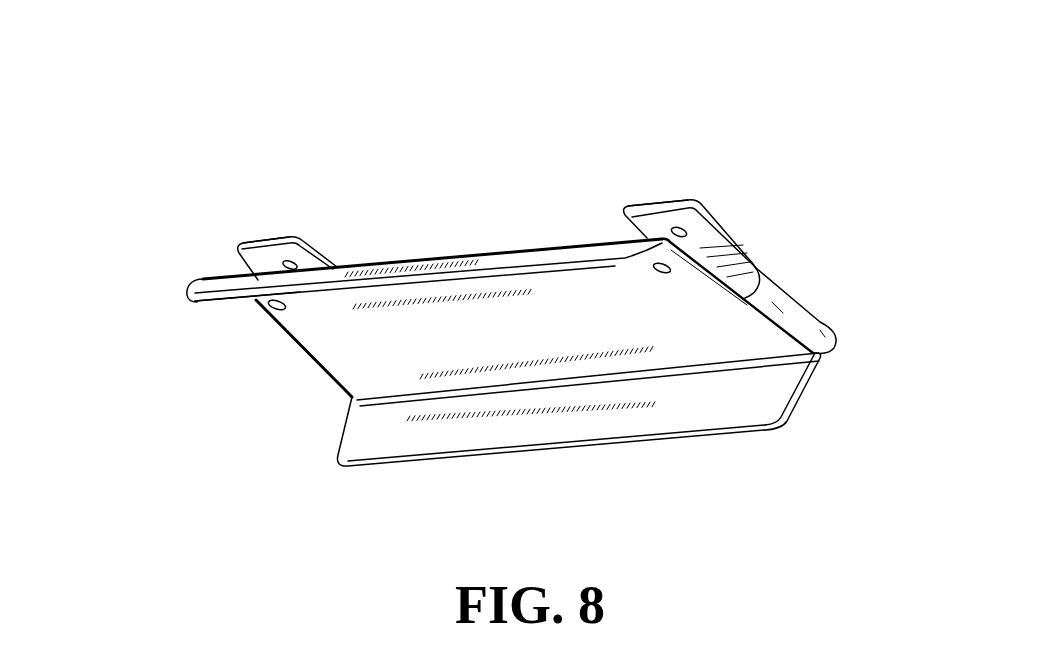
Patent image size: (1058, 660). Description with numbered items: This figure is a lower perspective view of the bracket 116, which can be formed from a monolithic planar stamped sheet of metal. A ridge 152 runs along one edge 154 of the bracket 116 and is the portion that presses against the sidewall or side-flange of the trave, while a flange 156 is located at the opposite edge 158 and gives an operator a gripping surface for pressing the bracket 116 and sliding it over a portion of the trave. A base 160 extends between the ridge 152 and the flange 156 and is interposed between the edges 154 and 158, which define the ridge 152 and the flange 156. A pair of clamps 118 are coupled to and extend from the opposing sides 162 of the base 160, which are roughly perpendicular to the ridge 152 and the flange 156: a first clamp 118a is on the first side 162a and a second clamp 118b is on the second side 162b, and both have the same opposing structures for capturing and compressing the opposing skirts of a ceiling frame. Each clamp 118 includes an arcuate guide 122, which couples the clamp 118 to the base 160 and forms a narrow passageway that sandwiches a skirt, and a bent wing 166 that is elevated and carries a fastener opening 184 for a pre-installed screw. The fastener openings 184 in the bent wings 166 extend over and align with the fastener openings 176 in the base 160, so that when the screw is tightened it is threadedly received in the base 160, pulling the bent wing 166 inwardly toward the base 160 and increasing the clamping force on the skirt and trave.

The bracket 116 is at (501, 95).
The clamp 118 is at (768, 252).
The first clamp 118a is at (698, 187).
The second clamp 118b is at (231, 229).
The arcuate guide 122 is at (817, 318).
The ridge 152 is at (217, 283).
The edge 154 is at (187, 302).
The flange 156 is at (645, 415).
The opposite edge 158 is at (440, 458).
The base 160 is at (533, 313).
The side 162 is at (313, 387).
The first side 162a is at (843, 398).
The second side 162b is at (216, 321).
The bent wing 166 is at (268, 242).
The fastener opening 176 is at (274, 310).
The fastener opening 184 is at (292, 264).